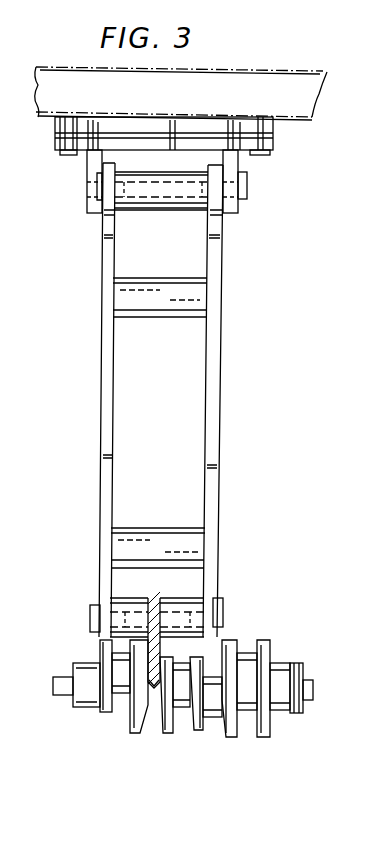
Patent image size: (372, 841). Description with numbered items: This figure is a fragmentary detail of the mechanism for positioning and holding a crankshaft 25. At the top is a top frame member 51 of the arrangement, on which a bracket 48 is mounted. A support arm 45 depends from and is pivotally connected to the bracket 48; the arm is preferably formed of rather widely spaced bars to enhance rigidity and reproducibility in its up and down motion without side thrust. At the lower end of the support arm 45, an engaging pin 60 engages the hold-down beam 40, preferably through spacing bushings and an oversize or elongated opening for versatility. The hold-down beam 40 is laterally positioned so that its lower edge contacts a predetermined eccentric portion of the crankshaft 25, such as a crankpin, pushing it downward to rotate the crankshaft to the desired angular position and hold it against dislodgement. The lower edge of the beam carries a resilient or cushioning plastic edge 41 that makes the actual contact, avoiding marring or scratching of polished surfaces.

The top frame member 51 is at (312, 75).
The bracket 48 is at (235, 160).
The support arm 45 is at (207, 382).
The engaging pin 60 is at (220, 612).
The hold-down beam 40 is at (160, 651).
The resilient plastic edge 41 is at (148, 683).
The crankshaft 25 is at (180, 707).